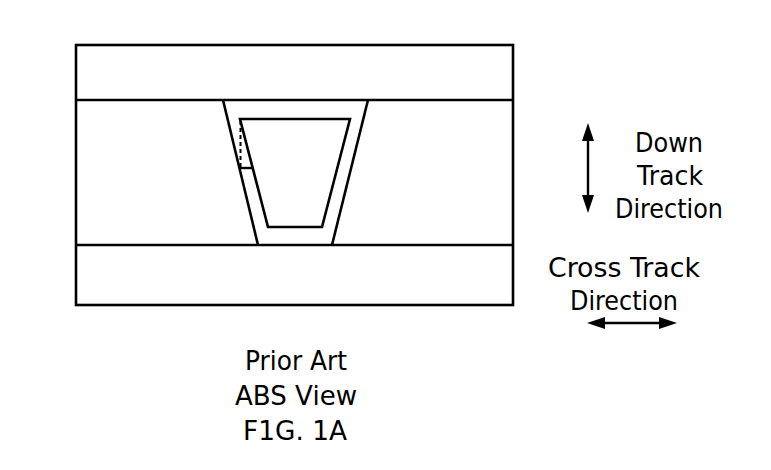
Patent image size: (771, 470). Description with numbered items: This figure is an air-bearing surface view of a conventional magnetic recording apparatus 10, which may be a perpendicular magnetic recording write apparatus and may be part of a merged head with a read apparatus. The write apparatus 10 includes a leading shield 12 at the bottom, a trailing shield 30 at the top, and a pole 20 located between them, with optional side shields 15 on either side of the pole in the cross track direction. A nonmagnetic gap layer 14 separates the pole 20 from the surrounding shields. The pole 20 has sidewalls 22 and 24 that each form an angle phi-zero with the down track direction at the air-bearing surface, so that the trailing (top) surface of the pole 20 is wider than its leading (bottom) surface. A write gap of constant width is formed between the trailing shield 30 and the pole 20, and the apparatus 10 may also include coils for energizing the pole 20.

The magnetic recording apparatus 10 is at (311, 30).
The leading shield 12 is at (294, 269).
The nonmagnetic gap layer 14 is at (228, 131).
The side shield 15 is at (290, 172).
The pole 20 is at (295, 173).
The sidewall 22 is at (236, 210).
The sidewall 24 is at (354, 208).
The trailing shield 30 is at (294, 78).